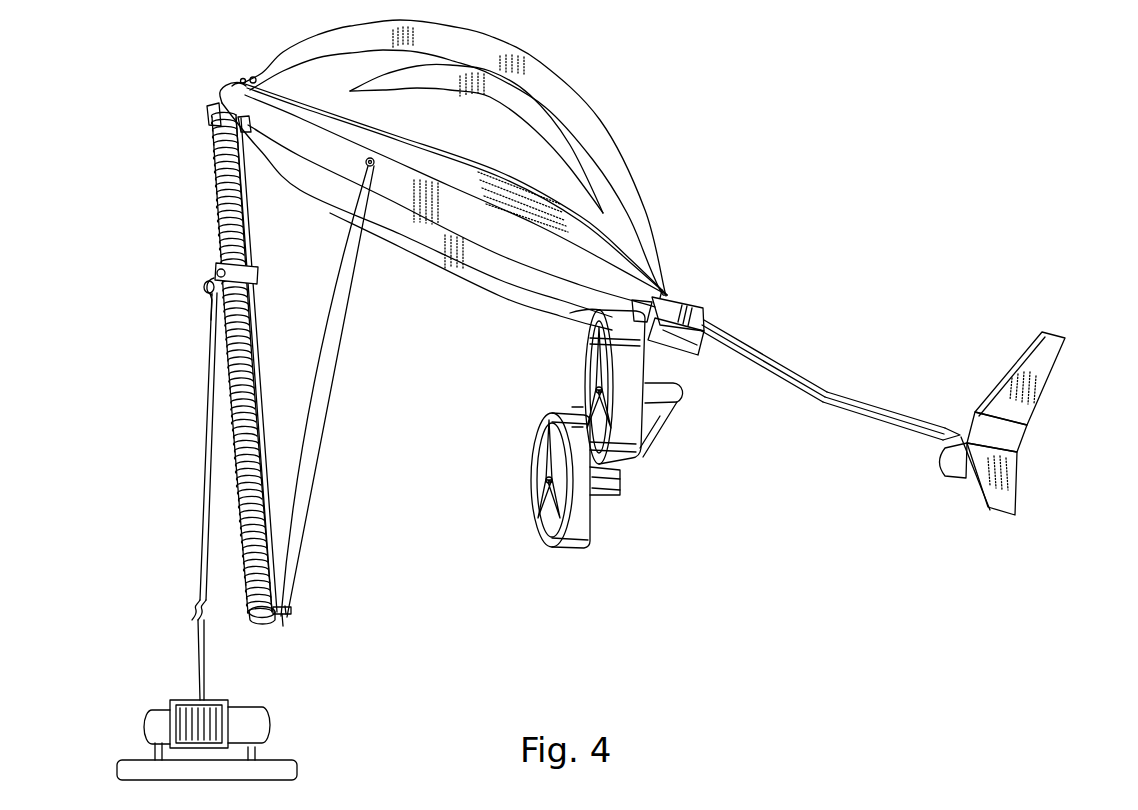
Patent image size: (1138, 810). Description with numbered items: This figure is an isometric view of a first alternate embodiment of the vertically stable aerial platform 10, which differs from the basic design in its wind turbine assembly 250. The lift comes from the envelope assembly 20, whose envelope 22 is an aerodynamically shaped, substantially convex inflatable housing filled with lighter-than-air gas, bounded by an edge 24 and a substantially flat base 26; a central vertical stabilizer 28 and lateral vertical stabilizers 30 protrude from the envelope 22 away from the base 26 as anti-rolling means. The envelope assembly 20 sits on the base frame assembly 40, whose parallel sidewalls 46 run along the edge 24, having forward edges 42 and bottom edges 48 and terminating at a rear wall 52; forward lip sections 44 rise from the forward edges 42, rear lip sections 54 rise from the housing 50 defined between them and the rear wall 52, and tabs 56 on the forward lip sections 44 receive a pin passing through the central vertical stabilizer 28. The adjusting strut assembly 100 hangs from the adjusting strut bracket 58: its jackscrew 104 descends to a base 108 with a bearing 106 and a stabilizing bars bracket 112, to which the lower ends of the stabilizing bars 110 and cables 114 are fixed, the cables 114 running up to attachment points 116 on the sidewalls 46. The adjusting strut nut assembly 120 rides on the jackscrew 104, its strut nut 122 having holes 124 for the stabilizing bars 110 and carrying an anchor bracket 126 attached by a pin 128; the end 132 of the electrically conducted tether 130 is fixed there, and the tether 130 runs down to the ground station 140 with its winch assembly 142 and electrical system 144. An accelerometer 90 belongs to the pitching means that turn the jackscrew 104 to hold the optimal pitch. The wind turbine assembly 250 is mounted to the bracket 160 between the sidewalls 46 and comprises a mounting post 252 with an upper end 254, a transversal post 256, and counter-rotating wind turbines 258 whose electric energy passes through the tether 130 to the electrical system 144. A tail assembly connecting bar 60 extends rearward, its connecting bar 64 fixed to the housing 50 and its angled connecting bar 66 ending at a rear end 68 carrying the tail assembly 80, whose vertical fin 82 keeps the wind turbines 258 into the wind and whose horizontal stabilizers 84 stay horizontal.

The vertically stable aerial platform 10 is at (832, 72).
The envelope assembly 20 is at (494, 188).
The envelope 22 is at (628, 215).
The edge 24 is at (625, 248).
The base 26 is at (330, 118).
The central vertical stabilizer 28 is at (545, 78).
The lateral vertical stabilizers 30 is at (553, 130).
The base frame assembly 40 is at (733, 288).
The forward edges 42 is at (235, 90).
The forward lip sections 44 is at (243, 80).
The sidewalls 46 is at (487, 237).
The bottom edges 48 is at (413, 225).
The housing 50 is at (690, 335).
The rear wall 52 is at (705, 312).
The rear lip sections 54 is at (690, 296).
The tabs 56 is at (248, 78).
The adjusting strut bracket 58 is at (212, 105).
The tail assembly connecting bar 60 is at (840, 345).
The connecting bar 64 is at (815, 395).
The connecting bar 66 is at (905, 418).
The rear end 68 is at (960, 440).
The tail assembly 80 is at (962, 505).
The vertical fin 82 is at (1033, 350).
The horizontal stabilizers 84 is at (1010, 440).
The accelerometer 90 is at (243, 130).
The adjusting strut assembly 100 is at (195, 170).
The jackscrew 104 is at (220, 197).
The bearing 106 is at (250, 612).
The base 108 is at (275, 620).
The stabilizing bars 110 is at (264, 352).
The stabilizing bars bracket 112 is at (282, 612).
The cables 114 is at (323, 424).
The attachment points 116 is at (370, 165).
The adjusting strut nut assembly 120 is at (190, 300).
The strut nut 122 is at (223, 270).
The holes 124 is at (258, 300).
The anchor bracket 126 is at (210, 285).
The pin 128 is at (215, 272).
The electrically conducted tether 130 is at (199, 455).
The end 132 is at (210, 293).
The ground station 140 is at (165, 685).
The winch assembly 142 is at (150, 718).
The electrical system 144 is at (255, 715).
The bracket 160 is at (610, 325).
The wind turbine assembly 250 is at (525, 455).
The mounting post 252 is at (640, 330).
The upper end 254 is at (647, 327).
The transversal post 256 is at (650, 425).
The wind turbines 258 is at (653, 423).